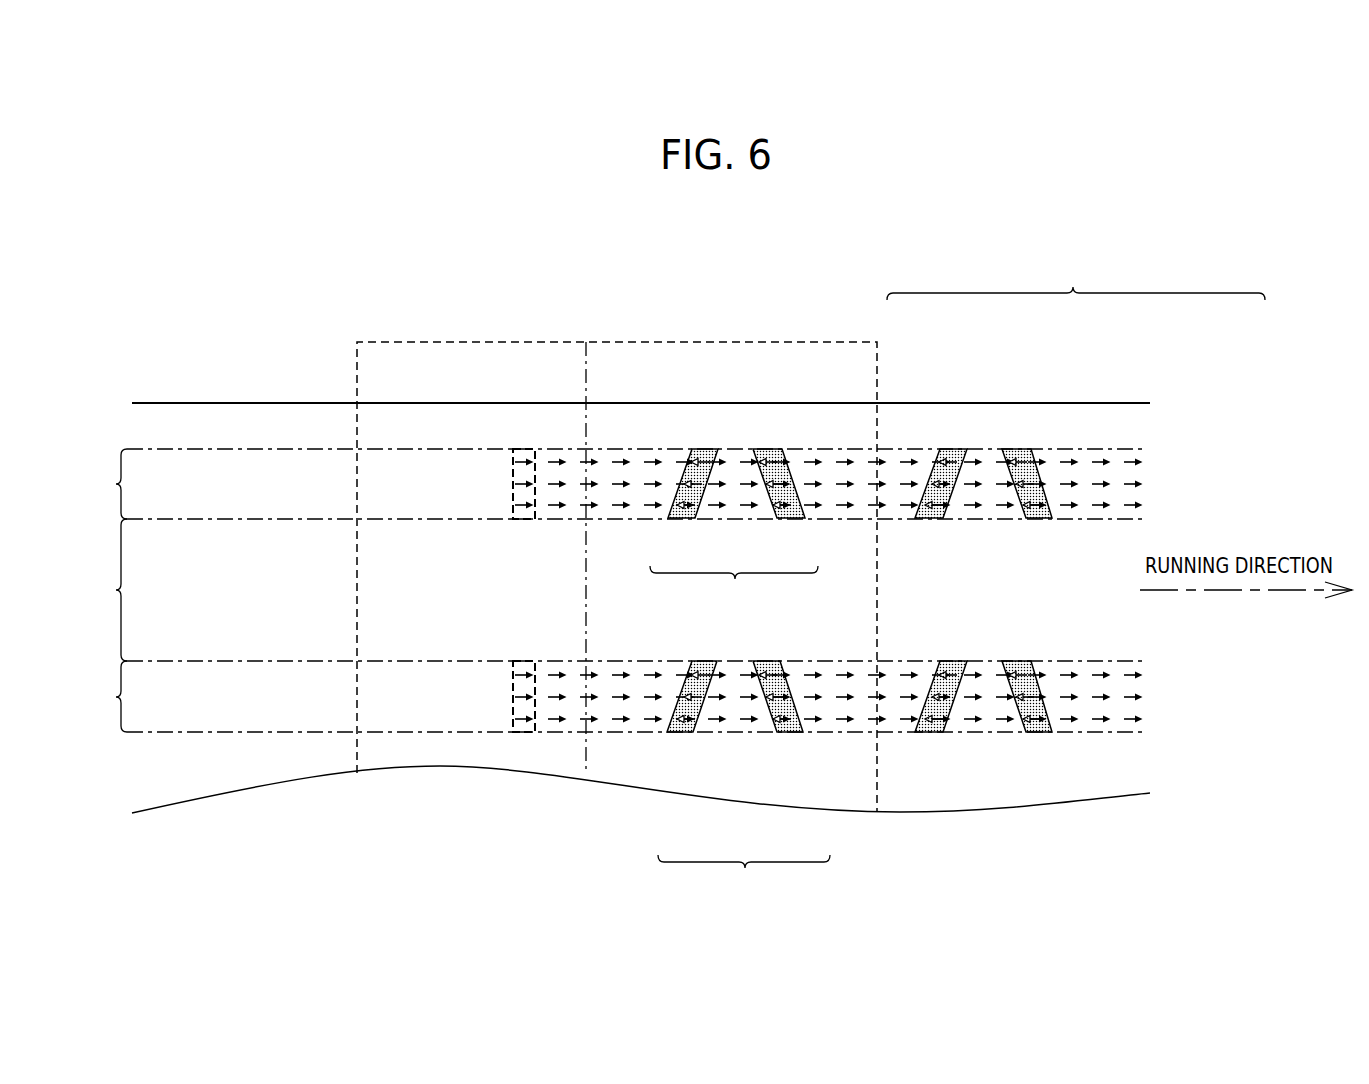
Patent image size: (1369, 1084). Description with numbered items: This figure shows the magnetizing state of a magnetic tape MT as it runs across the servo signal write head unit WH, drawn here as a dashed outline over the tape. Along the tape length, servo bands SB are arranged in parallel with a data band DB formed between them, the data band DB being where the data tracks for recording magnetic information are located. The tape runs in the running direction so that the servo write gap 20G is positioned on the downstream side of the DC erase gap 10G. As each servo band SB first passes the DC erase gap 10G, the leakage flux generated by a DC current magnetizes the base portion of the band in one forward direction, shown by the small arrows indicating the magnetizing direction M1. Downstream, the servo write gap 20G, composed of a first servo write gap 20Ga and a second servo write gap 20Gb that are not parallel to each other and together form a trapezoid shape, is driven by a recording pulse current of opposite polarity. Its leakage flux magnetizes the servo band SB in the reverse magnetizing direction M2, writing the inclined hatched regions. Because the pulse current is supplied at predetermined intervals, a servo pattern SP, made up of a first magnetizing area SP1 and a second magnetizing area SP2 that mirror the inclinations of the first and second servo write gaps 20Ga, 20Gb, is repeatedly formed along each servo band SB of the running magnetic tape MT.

The magnetic tape MT is at (147, 403).
The servo signal write head unit WH is at (493, 342).
The servo band SB is at (609, 590).
The data band DB is at (101, 590).
The magnetizing direction M1 is at (1122, 459).
The magnetizing direction M2 is at (705, 460).
The DC erase gap 10G is at (500, 703).
The servo write gap 20G is at (740, 733).
The first servo write gap 20Ga is at (650, 497).
The second servo write gap 20Gb is at (797, 493).
The servo pattern SP is at (1076, 277).
The first magnetizing area SP1 is at (940, 455).
The second magnetizing area SP2 is at (1032, 453).